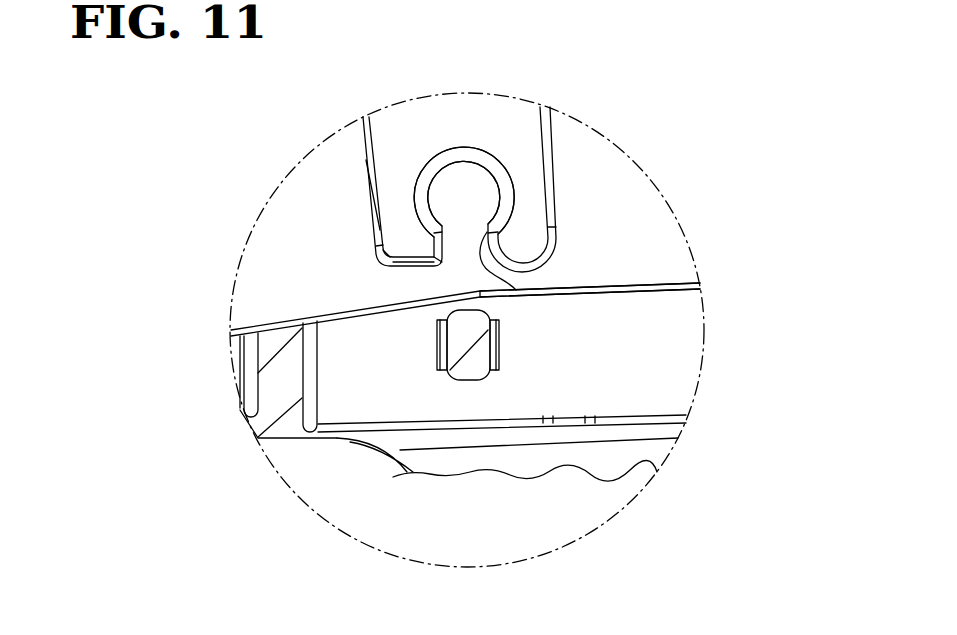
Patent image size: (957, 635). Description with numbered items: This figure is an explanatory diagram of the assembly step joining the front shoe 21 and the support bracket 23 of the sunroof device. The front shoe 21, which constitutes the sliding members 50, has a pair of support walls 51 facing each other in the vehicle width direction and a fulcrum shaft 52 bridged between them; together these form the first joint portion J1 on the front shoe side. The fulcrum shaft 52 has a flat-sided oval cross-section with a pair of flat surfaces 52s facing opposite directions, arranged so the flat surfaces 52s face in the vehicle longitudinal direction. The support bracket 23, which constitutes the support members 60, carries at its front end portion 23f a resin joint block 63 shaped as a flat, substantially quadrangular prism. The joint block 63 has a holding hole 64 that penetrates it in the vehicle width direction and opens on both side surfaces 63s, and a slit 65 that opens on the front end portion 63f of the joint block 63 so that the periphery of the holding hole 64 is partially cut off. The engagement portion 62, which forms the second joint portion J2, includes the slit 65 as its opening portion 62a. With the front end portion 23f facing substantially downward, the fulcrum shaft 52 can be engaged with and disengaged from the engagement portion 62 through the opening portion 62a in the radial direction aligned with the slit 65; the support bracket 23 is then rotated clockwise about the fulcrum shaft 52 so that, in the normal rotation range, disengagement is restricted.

The front shoe 21 is at (543, 375).
The sliding members 50 is at (543, 375).
The first joint portion J1 is at (543, 375).
The support bracket 23 is at (415, 330).
The support members 60 is at (332, 232).
The support walls 51 is at (625, 305).
The fulcrum shaft 52 is at (497, 416).
The flat surfaces 52s is at (437, 340).
The engagement portion 62 is at (467, 172).
The holding hole 64 is at (439, 171).
The opening portion 62a is at (545, 284).
The slit 65 is at (516, 292).
The joint block 63 is at (530, 219).
The second joint portion J2 is at (530, 219).
The front end portion 23f is at (530, 219).
The side surfaces 63s is at (380, 167).
The front end portion 63f is at (405, 264).